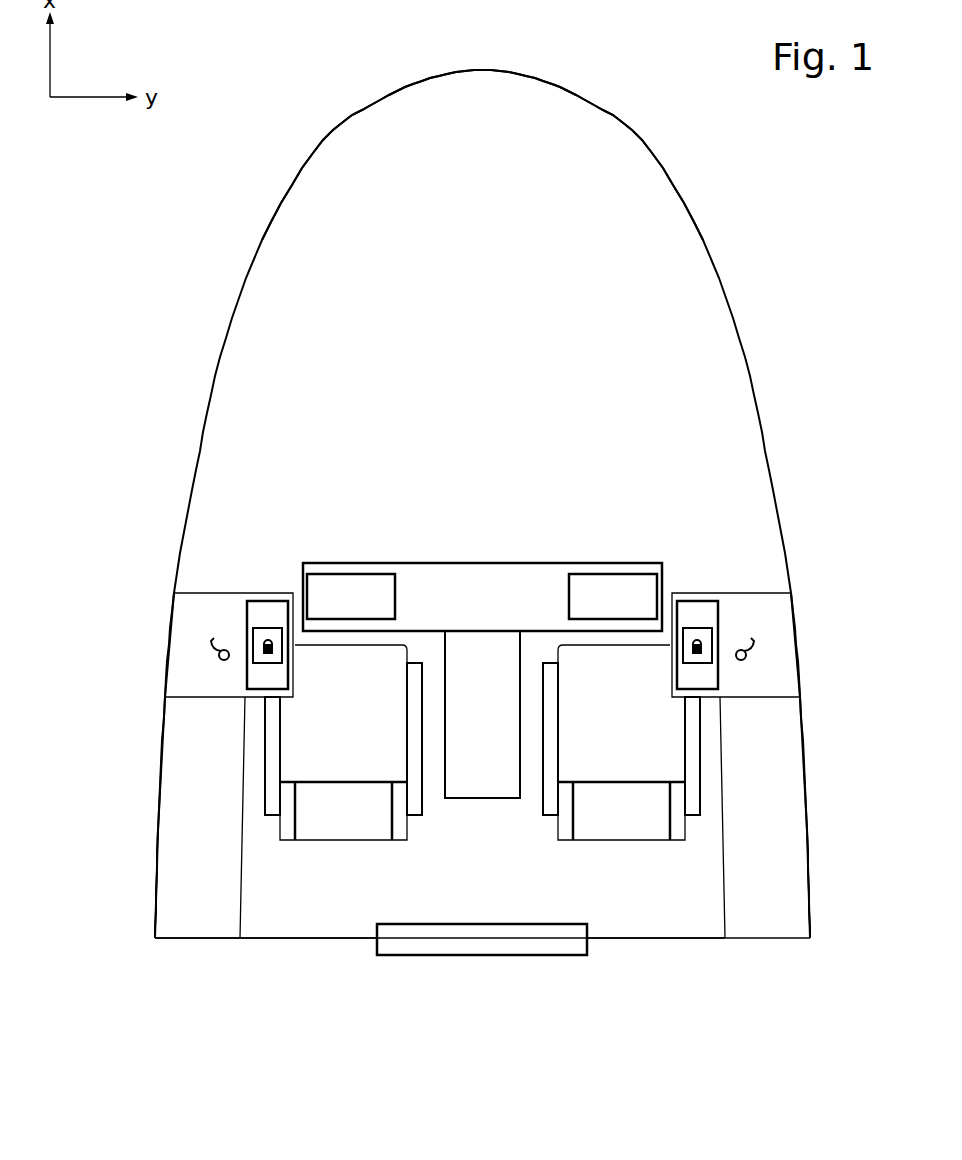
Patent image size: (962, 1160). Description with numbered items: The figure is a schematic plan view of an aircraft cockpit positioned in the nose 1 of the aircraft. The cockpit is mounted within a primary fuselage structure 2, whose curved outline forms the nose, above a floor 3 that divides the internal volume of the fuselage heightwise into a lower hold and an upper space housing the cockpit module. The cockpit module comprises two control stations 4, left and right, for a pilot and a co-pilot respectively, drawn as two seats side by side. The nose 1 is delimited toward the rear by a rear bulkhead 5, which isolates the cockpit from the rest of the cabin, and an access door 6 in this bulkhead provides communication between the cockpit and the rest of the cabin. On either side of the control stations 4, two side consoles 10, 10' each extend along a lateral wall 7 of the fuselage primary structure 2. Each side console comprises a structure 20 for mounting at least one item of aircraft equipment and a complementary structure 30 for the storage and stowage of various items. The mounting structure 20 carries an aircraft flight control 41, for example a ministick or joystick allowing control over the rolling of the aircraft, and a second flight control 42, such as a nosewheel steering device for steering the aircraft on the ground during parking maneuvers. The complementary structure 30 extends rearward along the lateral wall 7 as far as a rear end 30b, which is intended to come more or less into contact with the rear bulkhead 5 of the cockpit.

The nose 1 is at (790, 418).
The primary fuselage structure 2 is at (315, 133).
The floor 3 is at (637, 899).
The control stations 4 is at (524, 835).
The rear bulkhead 5 is at (630, 940).
The access door 6 is at (450, 943).
The lateral wall 7 is at (158, 790).
The side console 10 is at (308, 950).
The side console 10' is at (656, 947).
The structure for mounting of at least one item of aircraft equipment 20 is at (183, 676).
The complementary structure 30 is at (176, 880).
The rear end 30b is at (164, 927).
The aircraft flight control 41 is at (271, 630).
The second flight control 42 is at (222, 640).